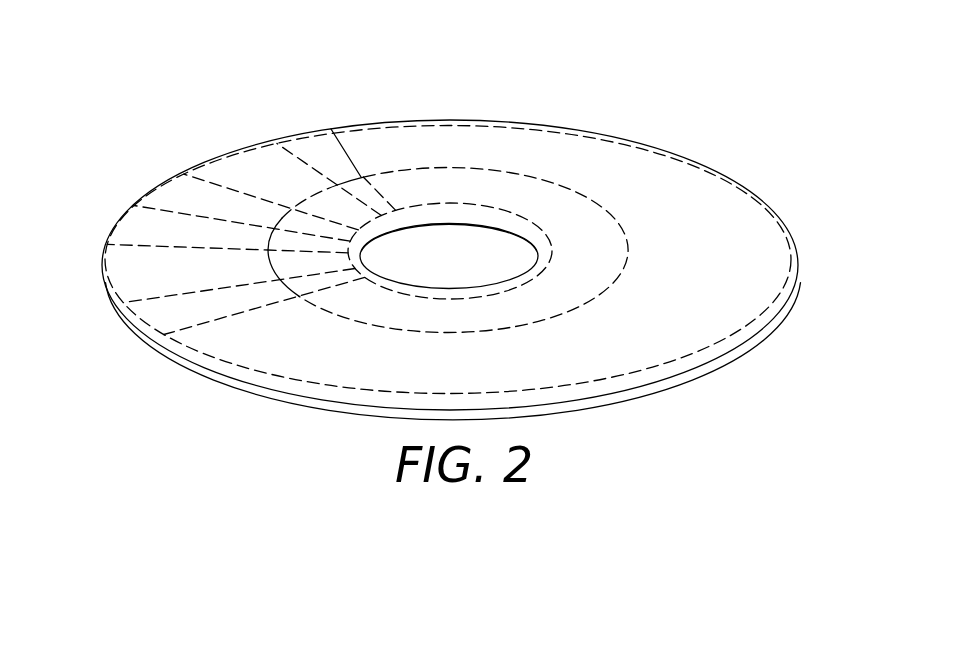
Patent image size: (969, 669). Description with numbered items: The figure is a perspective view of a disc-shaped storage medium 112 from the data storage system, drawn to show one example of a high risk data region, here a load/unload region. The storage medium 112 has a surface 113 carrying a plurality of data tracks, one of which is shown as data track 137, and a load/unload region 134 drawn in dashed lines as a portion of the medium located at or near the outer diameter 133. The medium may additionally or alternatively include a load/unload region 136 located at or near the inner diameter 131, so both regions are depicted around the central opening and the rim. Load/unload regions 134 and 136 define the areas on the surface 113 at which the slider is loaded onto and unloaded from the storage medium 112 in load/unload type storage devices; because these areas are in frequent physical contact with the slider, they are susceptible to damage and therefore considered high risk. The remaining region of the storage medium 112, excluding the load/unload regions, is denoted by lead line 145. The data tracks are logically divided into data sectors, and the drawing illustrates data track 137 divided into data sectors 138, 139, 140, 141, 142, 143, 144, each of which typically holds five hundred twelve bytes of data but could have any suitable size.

The storage medium 112 is at (680, 100).
The surface 113 is at (450, 145).
The inner diameter 131 is at (450, 290).
The outer diameter 133 is at (650, 392).
The load/unload region 134 is at (797, 262).
The load/unload region 136 is at (549, 252).
The data track 137 is at (600, 294).
The data sector 138 is at (282, 288).
The data sector 139 is at (271, 266).
The data sector 140 is at (268, 244).
The data sector 141 is at (276, 211).
The data sector 142 is at (290, 203).
The data sector 143 is at (337, 185).
The data sector 144 is at (380, 217).
The lead line 145 is at (660, 184).